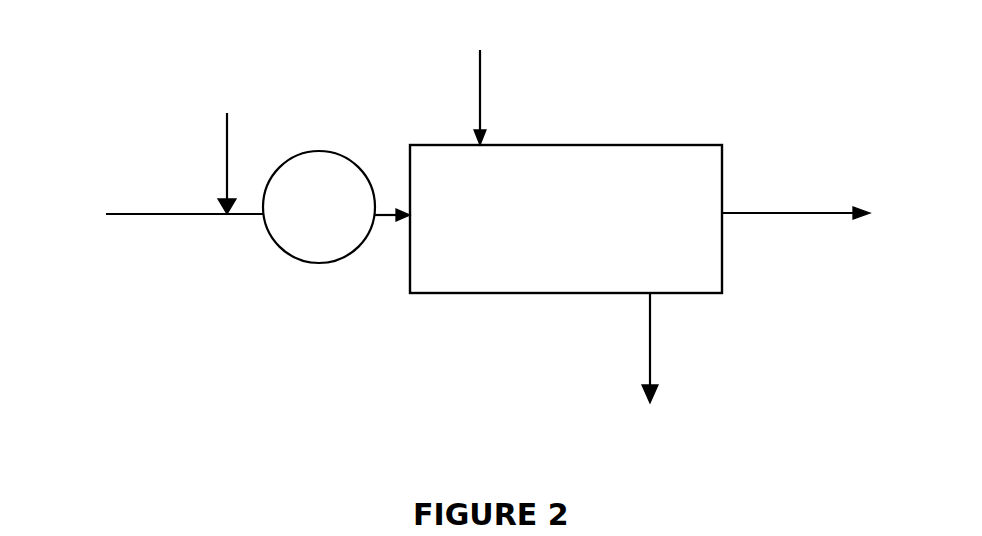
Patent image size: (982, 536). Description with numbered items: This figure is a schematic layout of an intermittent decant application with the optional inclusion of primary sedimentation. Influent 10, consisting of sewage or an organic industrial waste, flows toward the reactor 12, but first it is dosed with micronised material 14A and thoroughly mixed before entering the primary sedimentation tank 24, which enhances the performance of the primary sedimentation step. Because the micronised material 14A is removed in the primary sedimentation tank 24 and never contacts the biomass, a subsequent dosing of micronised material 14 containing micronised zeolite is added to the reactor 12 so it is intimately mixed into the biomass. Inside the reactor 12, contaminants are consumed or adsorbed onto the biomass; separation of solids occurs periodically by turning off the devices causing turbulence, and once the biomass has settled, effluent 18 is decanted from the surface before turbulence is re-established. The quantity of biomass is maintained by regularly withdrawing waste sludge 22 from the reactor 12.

The influent 10 is at (153, 215).
The micronised material 14A is at (227, 143).
The primary sedimentation tank 24 is at (360, 243).
The reactor 12 is at (567, 236).
The micronised material 14 is at (481, 68).
The effluent 18 is at (820, 212).
The waste sludge 22 is at (648, 349).